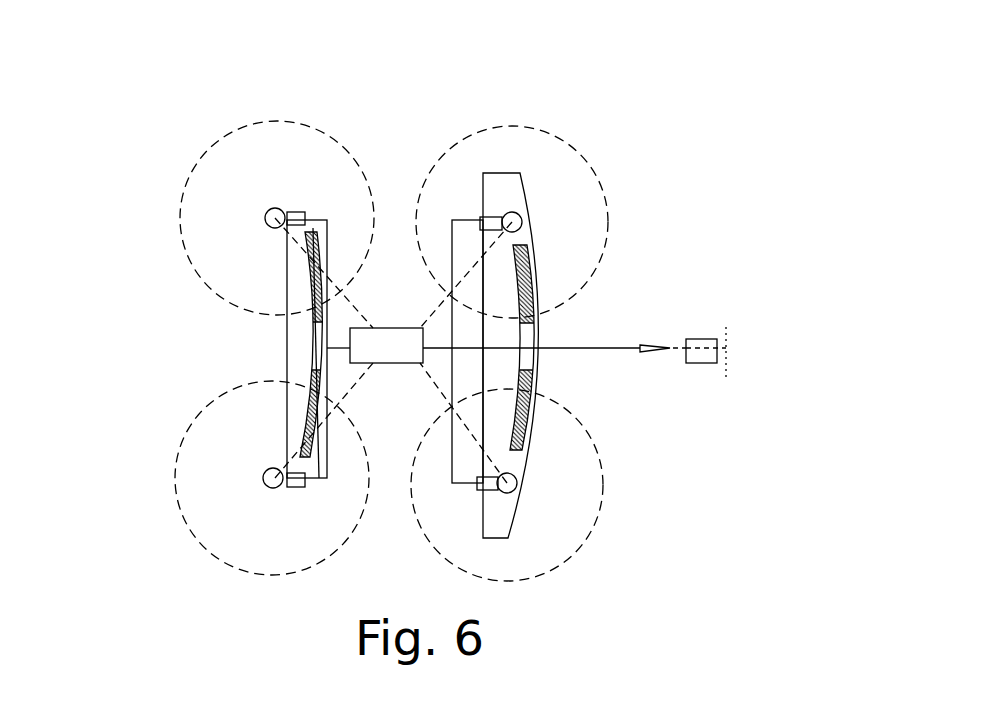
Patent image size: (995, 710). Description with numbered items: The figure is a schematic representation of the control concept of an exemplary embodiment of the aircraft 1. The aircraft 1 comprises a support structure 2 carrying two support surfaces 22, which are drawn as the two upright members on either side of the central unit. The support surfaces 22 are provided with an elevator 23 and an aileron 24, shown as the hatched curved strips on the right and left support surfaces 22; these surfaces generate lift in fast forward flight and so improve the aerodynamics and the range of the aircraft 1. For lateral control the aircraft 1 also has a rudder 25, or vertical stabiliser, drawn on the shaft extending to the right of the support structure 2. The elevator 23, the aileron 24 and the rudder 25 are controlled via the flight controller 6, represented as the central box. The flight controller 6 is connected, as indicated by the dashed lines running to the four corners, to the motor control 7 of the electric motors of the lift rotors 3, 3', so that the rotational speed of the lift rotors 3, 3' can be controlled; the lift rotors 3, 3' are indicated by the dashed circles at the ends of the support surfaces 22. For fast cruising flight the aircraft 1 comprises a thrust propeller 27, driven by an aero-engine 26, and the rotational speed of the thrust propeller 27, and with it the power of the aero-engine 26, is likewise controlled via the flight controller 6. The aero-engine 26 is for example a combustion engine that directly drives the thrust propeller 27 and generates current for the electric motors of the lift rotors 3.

The aircraft 1 is at (148, 130).
The support structure 2 is at (537, 325).
The lift rotor 3 is at (400, 324).
The lift rotor 3' is at (400, 333).
The flight controller 6 is at (388, 347).
The motor control 7 is at (297, 487).
The support surface 22 is at (498, 172).
The elevator 23 is at (530, 262).
The aileron 24 is at (317, 253).
The rudder 25 is at (657, 355).
The aero-engine 26 is at (699, 339).
The thrust propeller 27 is at (728, 342).